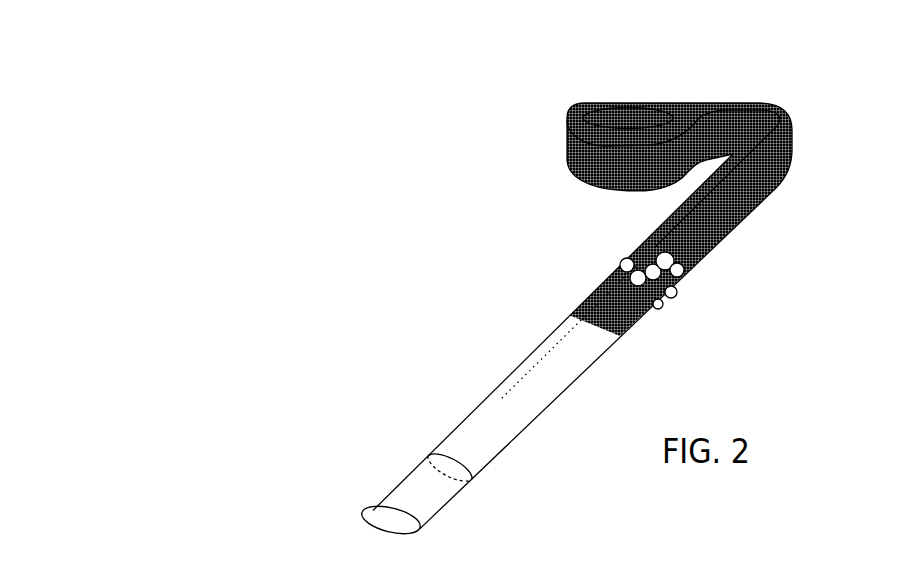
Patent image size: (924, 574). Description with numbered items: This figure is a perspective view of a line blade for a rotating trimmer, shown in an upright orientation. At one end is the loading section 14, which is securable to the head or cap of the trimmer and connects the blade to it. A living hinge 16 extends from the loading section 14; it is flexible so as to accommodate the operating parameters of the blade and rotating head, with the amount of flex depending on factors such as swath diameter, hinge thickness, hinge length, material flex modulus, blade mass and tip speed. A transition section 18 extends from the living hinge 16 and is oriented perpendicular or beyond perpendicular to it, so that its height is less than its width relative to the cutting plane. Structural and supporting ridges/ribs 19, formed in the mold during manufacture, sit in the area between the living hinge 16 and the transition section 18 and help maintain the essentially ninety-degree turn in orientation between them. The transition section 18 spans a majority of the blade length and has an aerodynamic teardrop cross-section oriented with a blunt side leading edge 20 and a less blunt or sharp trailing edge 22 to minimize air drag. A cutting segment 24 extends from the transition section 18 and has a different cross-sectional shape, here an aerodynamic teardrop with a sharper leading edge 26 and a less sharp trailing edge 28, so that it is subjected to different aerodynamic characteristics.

The loading section 14 is at (595, 92).
The living hinge 16 is at (764, 191).
The transition section 18 is at (520, 315).
The structural and supporting ridges/ribs 19 is at (638, 248).
The blunt side leading edge 20 is at (640, 318).
The trailing edge 22 is at (492, 392).
The cutting segment 24 is at (384, 479).
The leading edge 26 is at (456, 494).
The trailing edge 28 is at (362, 517).